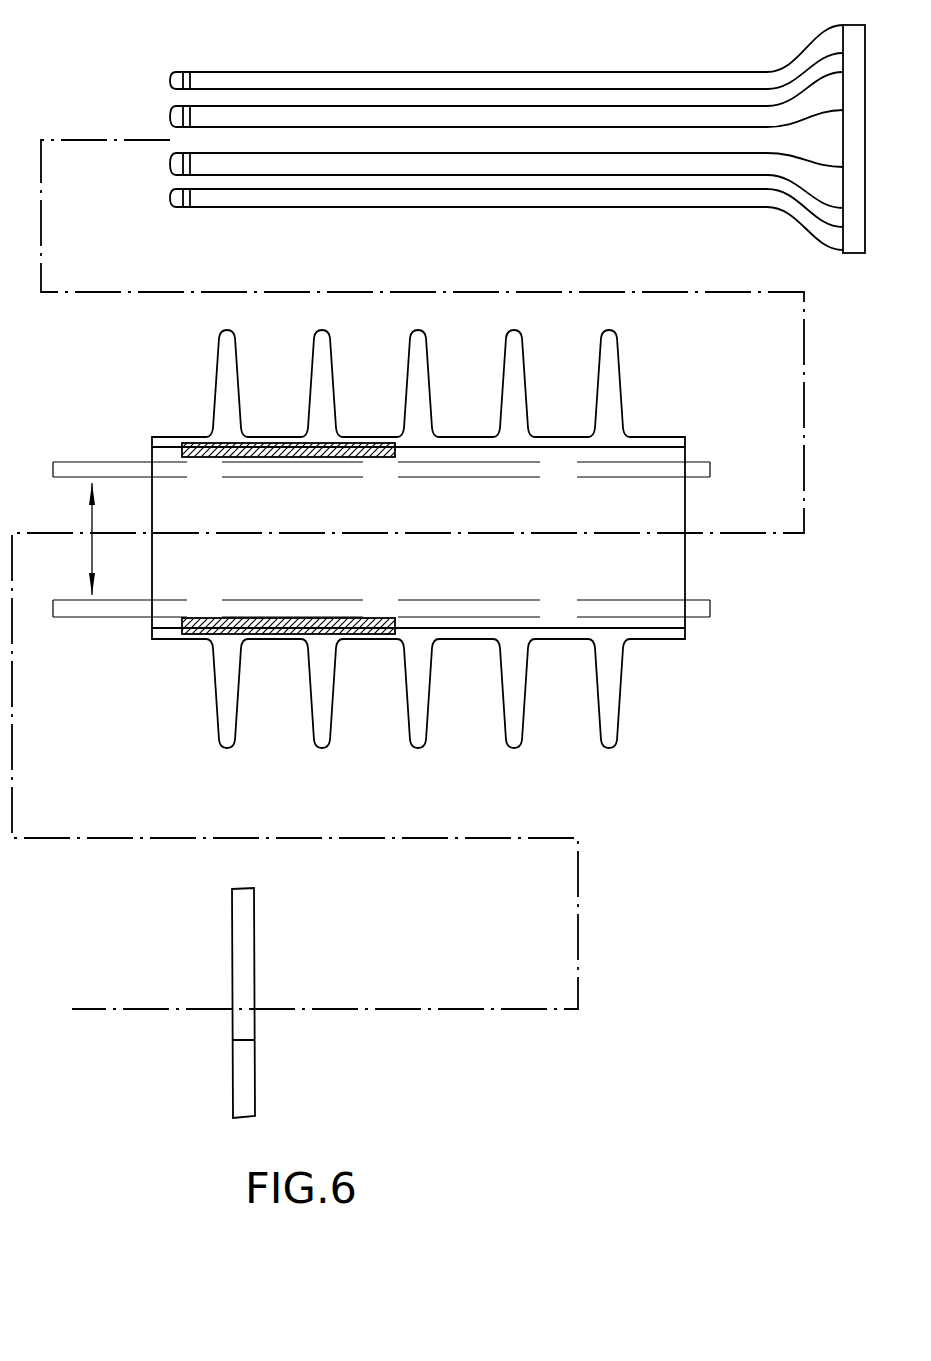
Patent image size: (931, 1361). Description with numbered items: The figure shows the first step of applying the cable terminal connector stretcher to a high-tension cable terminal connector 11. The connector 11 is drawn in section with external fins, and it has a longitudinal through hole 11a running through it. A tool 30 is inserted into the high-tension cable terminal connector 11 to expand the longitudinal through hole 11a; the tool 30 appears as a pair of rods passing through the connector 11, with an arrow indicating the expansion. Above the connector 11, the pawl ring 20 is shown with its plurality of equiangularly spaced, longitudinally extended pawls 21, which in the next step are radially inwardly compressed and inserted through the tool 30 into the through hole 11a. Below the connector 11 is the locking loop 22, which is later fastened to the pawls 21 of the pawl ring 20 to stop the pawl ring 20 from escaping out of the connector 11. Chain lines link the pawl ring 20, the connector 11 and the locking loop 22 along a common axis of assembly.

The pawl ring 20 is at (855, 76).
The pawls 21 is at (400, 84).
The high-tension cable terminal connector 11 is at (633, 442).
The longitudinal through hole 11a is at (608, 551).
The tool 30 is at (130, 467).
The locking loop 22 is at (247, 918).